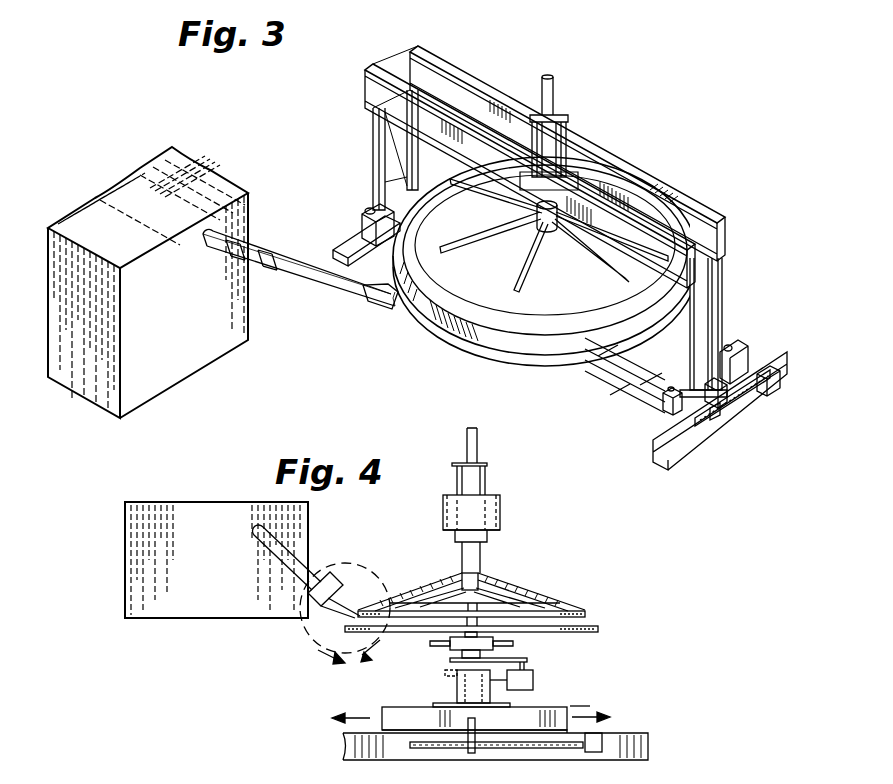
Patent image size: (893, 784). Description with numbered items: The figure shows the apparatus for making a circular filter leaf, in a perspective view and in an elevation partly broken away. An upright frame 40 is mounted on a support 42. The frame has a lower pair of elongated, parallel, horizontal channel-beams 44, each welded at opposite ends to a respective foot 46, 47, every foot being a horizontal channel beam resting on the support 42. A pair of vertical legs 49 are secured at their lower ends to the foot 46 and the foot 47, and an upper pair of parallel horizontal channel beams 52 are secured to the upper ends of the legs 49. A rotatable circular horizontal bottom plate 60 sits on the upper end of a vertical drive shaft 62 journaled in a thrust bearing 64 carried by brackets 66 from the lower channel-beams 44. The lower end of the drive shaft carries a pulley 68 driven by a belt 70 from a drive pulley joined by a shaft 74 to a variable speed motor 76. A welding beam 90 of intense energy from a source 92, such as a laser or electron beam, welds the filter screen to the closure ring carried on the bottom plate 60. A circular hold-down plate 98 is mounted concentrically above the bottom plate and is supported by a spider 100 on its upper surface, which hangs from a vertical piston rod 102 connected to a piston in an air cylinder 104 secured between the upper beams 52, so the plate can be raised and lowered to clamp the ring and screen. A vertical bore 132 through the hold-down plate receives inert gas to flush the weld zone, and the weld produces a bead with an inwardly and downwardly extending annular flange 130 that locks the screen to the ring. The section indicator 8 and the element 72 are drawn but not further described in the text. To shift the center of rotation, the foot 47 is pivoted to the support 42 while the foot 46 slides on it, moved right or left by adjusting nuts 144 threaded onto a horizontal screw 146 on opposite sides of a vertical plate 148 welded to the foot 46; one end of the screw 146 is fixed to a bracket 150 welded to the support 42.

In FIG. 4, the direction of rotation arrow 8 is at (349, 657).
In FIG. 3, the upright frame 40 is at (522, 161).
In FIG. 3, the support 42 is at (338, 233).
In FIG. 4, the support 42 is at (648, 733).
In FIG. 3, the lower channel-beams 44 is at (612, 375).
In FIG. 3, the foot 46 is at (738, 345).
In FIG. 4, the foot 46 is at (540, 707).
In FIG. 3, the foot 47 is at (362, 212).
In FIG. 3, the vertical legs 49 is at (372, 165).
In FIG. 4, the vertical legs 49 is at (457, 686).
In FIG. 3, the upper channel beams 52 is at (378, 68).
In FIG. 3, the bottom plate 60 is at (498, 362).
In FIG. 4, the bottom plate 60 is at (600, 629).
In FIG. 4, the drive shaft 62 is at (480, 635).
In FIG. 4, the thrust bearing 64 is at (450, 646).
In FIG. 4, the brackets 66 is at (430, 643).
In FIG. 4, the pulley 68 is at (462, 655).
In FIG. 4, the belt 70 is at (528, 660).
In FIG. 4, the support 72 is at (540, 660).
In FIG. 4, the shaft 74 is at (590, 678).
In FIG. 4, the variable speed motor 76 is at (535, 686).
In FIG. 3, the welding beam 90 is at (388, 308).
In FIG. 3, the source 92 is at (332, 300).
In FIG. 3, the hold-down plate 98 is at (552, 346).
In FIG. 4, the hold-down plate 98 is at (588, 613).
In FIG. 3, the spider 100 is at (477, 245).
In FIG. 3, the piston rod 102 is at (560, 103).
In FIG. 3, the air cylinder 104 is at (572, 140).
In FIG. 4, the annular flange 130 is at (560, 600).
In FIG. 4, the vertical bore 132 is at (508, 600).
In FIG. 3, the adjusting nuts 144 is at (714, 425).
In FIG. 4, the adjusting nuts 144 is at (476, 750).
In FIG. 3, the horizontal screw 146 is at (745, 410).
In FIG. 4, the horizontal screw 146 is at (550, 748).
In FIG. 3, the vertical plate 148 is at (727, 415).
In FIG. 4, the vertical plate 148 is at (455, 730).
In FIG. 3, the bracket 150 is at (778, 390).
In FIG. 4, the bracket 150 is at (602, 735).